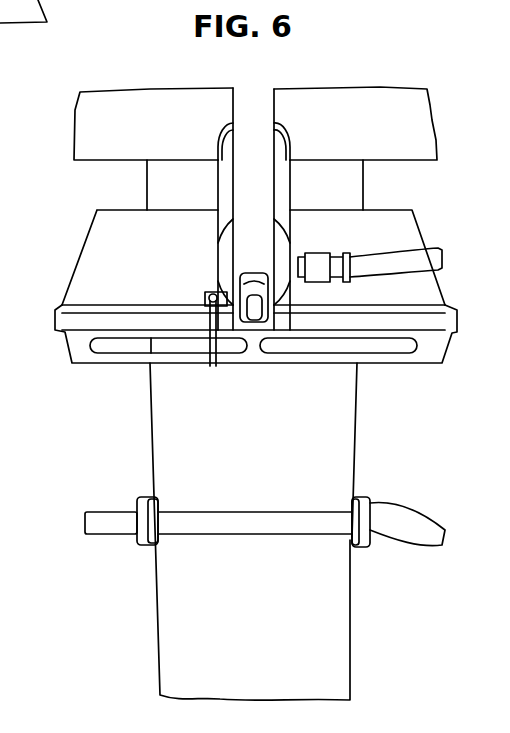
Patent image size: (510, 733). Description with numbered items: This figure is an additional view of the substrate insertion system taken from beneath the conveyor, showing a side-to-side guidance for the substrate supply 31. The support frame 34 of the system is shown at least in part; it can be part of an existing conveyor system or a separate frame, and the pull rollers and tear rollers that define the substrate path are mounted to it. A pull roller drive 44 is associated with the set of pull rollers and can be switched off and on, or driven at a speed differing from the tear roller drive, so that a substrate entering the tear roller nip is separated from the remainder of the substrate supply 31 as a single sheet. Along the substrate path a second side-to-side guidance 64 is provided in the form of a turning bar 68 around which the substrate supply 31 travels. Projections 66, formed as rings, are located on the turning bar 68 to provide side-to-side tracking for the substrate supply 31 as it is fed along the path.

The substrate supply 31 is at (320, 655).
The support frame 34 is at (72, 320).
The pull roller drive 44 is at (217, 182).
The second side-to-side guidance 64 is at (277, 468).
The projections 66 is at (260, 520).
The turning bar 68 is at (277, 533).